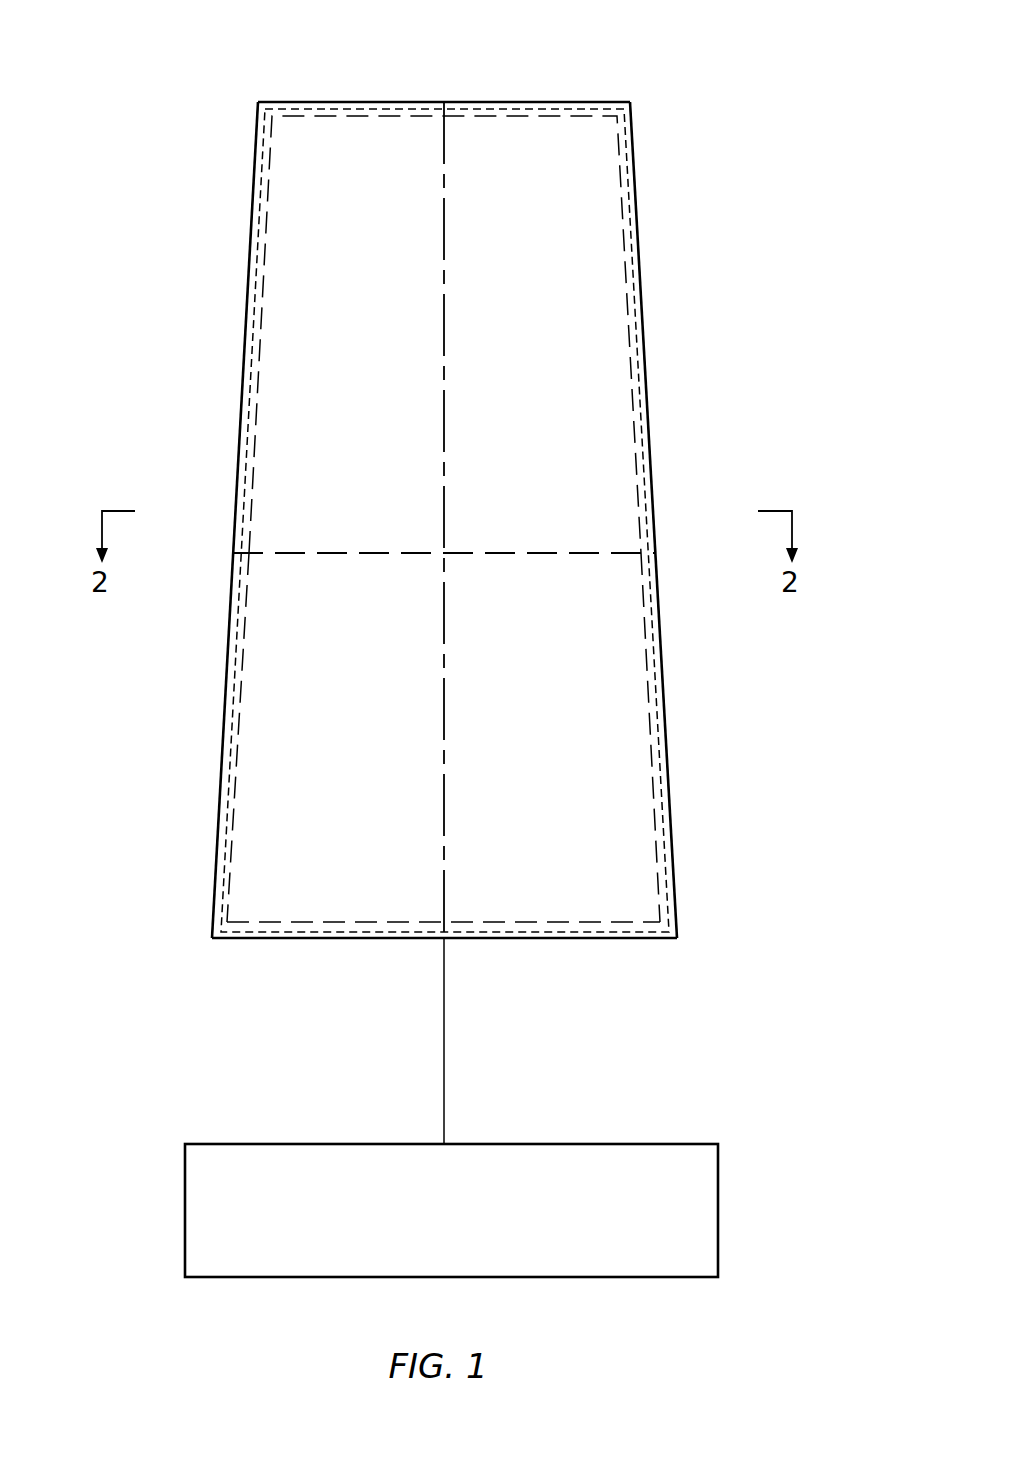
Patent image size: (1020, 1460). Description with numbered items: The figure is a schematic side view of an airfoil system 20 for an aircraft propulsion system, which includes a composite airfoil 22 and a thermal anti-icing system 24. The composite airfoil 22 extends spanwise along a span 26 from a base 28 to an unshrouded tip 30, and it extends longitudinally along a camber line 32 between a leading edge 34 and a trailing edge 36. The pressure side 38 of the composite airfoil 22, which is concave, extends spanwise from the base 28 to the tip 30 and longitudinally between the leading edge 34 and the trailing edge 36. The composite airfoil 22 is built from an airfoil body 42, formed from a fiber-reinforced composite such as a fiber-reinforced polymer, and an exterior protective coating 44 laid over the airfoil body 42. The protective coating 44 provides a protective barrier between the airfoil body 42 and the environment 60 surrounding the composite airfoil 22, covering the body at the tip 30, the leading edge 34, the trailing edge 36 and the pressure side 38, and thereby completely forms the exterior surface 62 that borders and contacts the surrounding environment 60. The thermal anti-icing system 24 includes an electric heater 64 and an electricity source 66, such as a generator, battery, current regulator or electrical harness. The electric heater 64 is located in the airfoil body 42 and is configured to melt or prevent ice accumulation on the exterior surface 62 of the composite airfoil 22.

The airfoil system 20 is at (748, 94).
The composite airfoil 22 is at (648, 79).
The thermal anti-icing system 24 is at (148, 1166).
The span 26 is at (444, 378).
The base 28 is at (596, 940).
The tip 30 is at (557, 102).
The camber line 32 is at (320, 556).
The leading edge 34 is at (229, 647).
The trailing edge 36 is at (660, 632).
The pressure side 38 is at (288, 754).
The airfoil body 42 is at (238, 464).
The exterior protective coating 44 is at (233, 403).
The environment 60 is at (85, 282).
The exterior surface 62 is at (303, 300).
The electric heater 64 is at (288, 940).
The electricity source 66 is at (718, 1210).